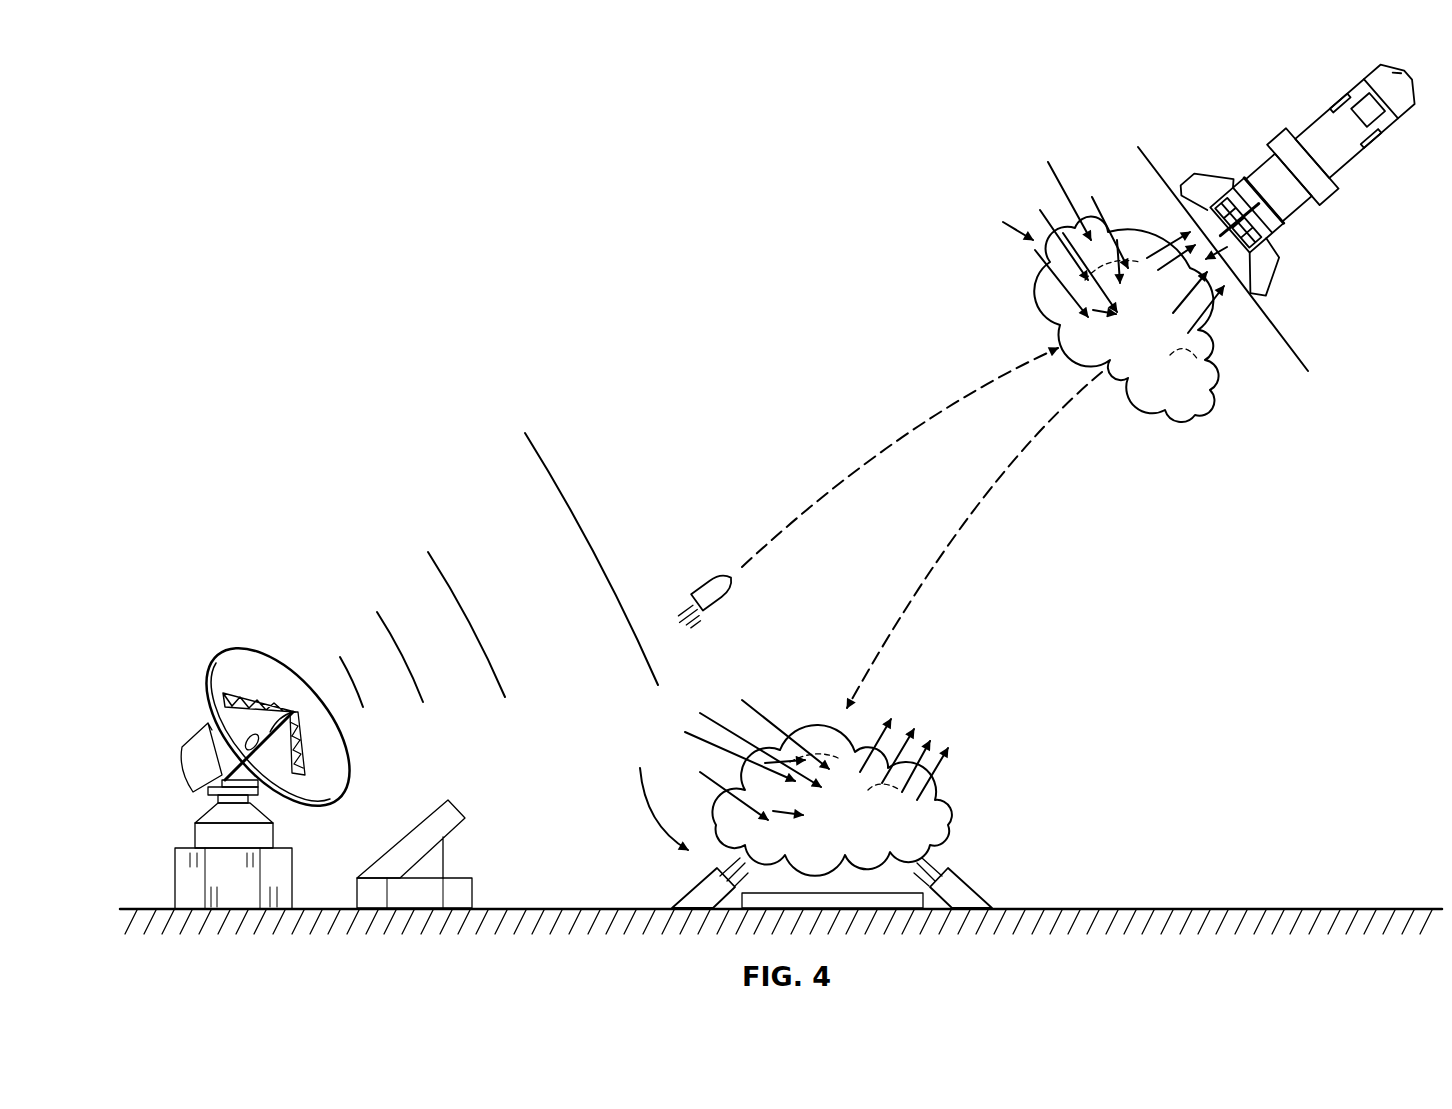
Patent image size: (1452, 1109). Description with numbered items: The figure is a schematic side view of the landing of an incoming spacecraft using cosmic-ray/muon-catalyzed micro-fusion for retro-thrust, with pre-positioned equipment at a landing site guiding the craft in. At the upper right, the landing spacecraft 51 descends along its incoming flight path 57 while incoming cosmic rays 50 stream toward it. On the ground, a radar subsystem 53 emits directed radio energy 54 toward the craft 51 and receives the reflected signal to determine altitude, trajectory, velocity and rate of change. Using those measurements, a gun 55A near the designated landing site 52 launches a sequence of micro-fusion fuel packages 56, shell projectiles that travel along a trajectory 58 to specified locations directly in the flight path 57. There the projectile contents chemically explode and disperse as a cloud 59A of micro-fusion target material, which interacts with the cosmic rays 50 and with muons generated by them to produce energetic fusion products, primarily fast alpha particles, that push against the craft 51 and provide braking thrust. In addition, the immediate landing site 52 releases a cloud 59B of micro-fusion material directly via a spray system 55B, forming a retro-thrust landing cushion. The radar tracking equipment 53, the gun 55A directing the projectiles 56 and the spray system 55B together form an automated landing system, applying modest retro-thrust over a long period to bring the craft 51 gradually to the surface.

The cosmic rays 50 is at (1057, 172).
The landing spacecraft 51 is at (1398, 130).
The landing site 52 is at (641, 800).
The radar subsystem 53 is at (185, 848).
The directed radio energy 54 is at (432, 553).
The gun 55A is at (437, 808).
The spray system 55B is at (690, 893).
The micro-fusion fuel packages 56 is at (703, 582).
The incoming flight path 57 is at (977, 510).
The trajectory 58 is at (922, 432).
The cloud of micro-fusion target material 59A is at (1203, 402).
The cloud of micro-fusion material 59B is at (936, 792).